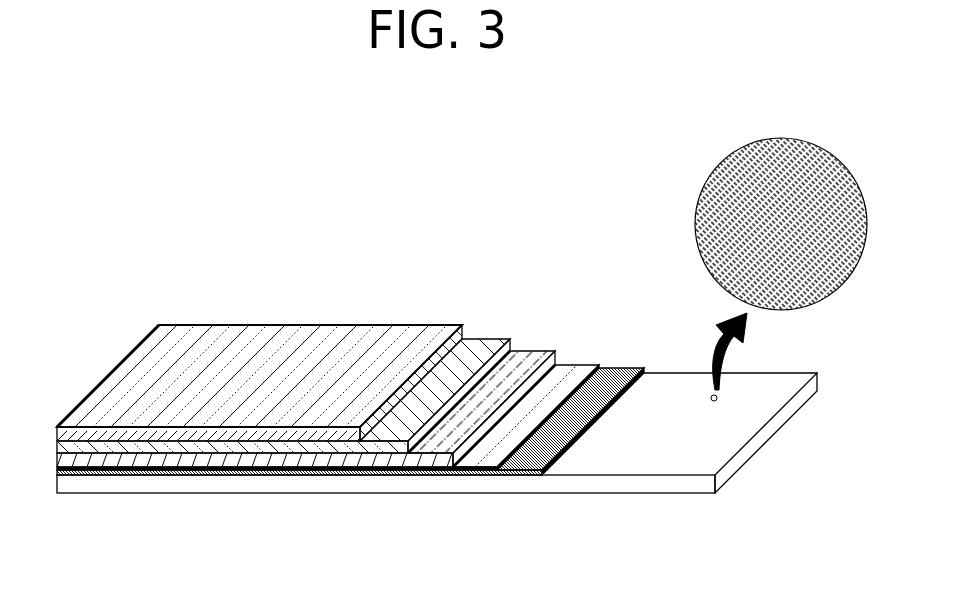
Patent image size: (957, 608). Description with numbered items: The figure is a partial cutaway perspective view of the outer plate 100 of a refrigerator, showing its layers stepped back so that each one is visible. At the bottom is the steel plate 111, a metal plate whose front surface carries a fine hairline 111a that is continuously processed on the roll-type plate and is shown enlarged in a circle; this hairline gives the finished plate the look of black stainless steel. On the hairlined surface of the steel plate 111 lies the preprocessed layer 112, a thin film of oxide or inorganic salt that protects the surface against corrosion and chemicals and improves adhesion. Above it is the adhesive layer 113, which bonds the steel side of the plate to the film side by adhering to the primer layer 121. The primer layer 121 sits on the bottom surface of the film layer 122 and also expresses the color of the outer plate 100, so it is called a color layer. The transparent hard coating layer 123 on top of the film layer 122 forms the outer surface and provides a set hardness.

The outer plate 100 is at (183, 282).
The steel plate 111 is at (663, 382).
The hairline 111a is at (808, 150).
The preprocessed layer 112 is at (617, 380).
The adhesive layer 113 is at (570, 380).
The primer layer 121 is at (517, 348).
The film layer 122 is at (480, 347).
The hard coating layer 123 is at (313, 355).